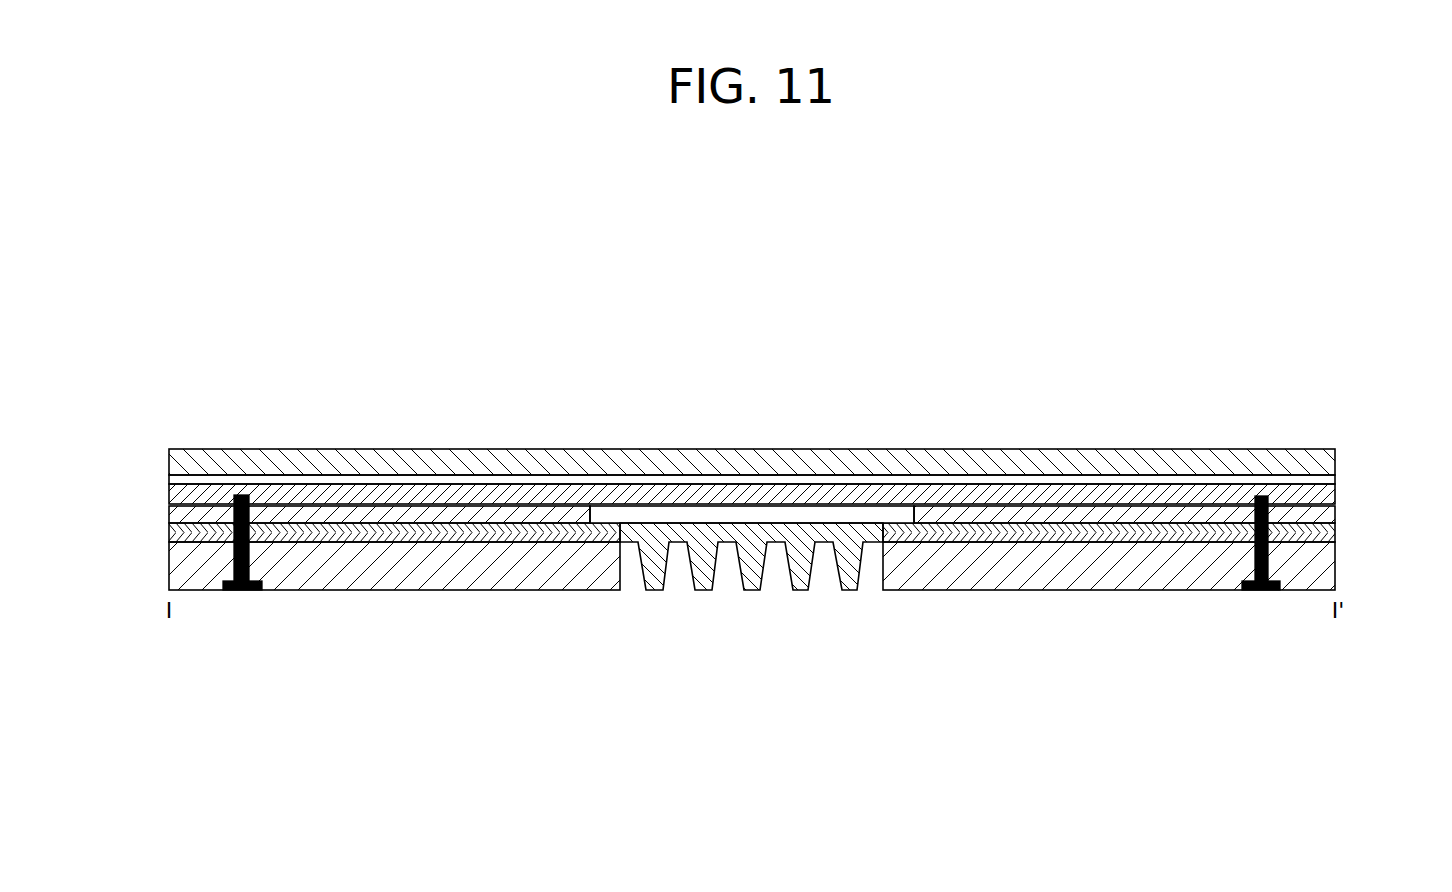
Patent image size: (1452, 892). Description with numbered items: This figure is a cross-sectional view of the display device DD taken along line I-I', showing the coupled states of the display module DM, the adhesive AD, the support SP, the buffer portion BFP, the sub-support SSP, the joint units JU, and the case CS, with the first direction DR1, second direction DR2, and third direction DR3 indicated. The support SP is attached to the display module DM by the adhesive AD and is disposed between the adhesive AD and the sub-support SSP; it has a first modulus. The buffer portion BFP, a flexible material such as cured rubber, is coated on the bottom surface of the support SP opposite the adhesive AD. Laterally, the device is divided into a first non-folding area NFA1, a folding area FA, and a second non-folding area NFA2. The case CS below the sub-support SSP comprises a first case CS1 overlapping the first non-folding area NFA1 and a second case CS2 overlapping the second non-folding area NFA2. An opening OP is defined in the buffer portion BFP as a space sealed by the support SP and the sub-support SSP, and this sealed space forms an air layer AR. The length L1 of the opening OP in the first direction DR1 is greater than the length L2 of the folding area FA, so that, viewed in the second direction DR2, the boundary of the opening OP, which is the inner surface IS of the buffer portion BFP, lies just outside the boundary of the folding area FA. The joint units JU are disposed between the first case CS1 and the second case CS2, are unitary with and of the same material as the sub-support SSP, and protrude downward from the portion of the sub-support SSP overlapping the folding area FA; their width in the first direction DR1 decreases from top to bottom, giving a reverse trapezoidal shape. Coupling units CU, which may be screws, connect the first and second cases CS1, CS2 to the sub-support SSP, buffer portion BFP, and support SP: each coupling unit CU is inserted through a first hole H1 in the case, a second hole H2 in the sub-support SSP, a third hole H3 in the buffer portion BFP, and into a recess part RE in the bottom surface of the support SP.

The display device DD is at (1261, 327).
The display module DM is at (1322, 462).
The adhesive AD is at (1330, 480).
The support SP is at (1327, 497).
The buffer portion BFP is at (1330, 517).
The sub-support SSP is at (1327, 530).
The case CS is at (1348, 564).
The first case CS1 is at (398, 590).
The second case CS2 is at (1107, 590).
The opening OP is at (716, 505).
The air layer AR is at (780, 517).
The joint unit JU is at (848, 588).
The inner surface IS is at (592, 510).
The coupling unit CU is at (241, 591).
The recess part RE is at (236, 485).
The first hole H1 is at (224, 560).
The second hole H2 is at (224, 532).
The third hole H3 is at (224, 511).
The first non-folding area NFA1 is at (169, 449).
The folding area FA is at (620, 688).
The second non-folding area NFA2 is at (1335, 449).
The length of the opening L1 is at (590, 523).
The length of the folding area L2 is at (620, 682).
The first direction DR1 is at (143, 768).
The second direction DR2 is at (137, 794).
The third direction DR3 is at (133, 772).